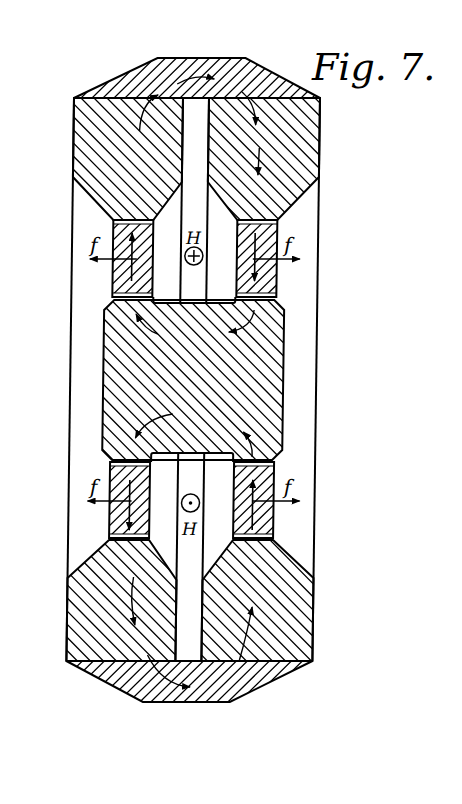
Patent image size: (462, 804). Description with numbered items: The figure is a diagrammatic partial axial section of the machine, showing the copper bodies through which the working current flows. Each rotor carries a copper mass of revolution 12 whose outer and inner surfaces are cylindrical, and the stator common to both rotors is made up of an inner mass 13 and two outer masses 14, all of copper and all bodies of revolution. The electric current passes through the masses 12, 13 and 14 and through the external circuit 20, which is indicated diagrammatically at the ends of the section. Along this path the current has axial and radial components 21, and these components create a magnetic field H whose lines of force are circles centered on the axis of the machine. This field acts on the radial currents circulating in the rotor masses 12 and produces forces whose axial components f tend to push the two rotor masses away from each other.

The mass of revolution 12 is at (279, 221).
The inner mass 13 is at (266, 369).
The outer masses 14 is at (260, 154).
The external circuit 20 is at (162, 79).
The axial and radial components 21 is at (257, 113).